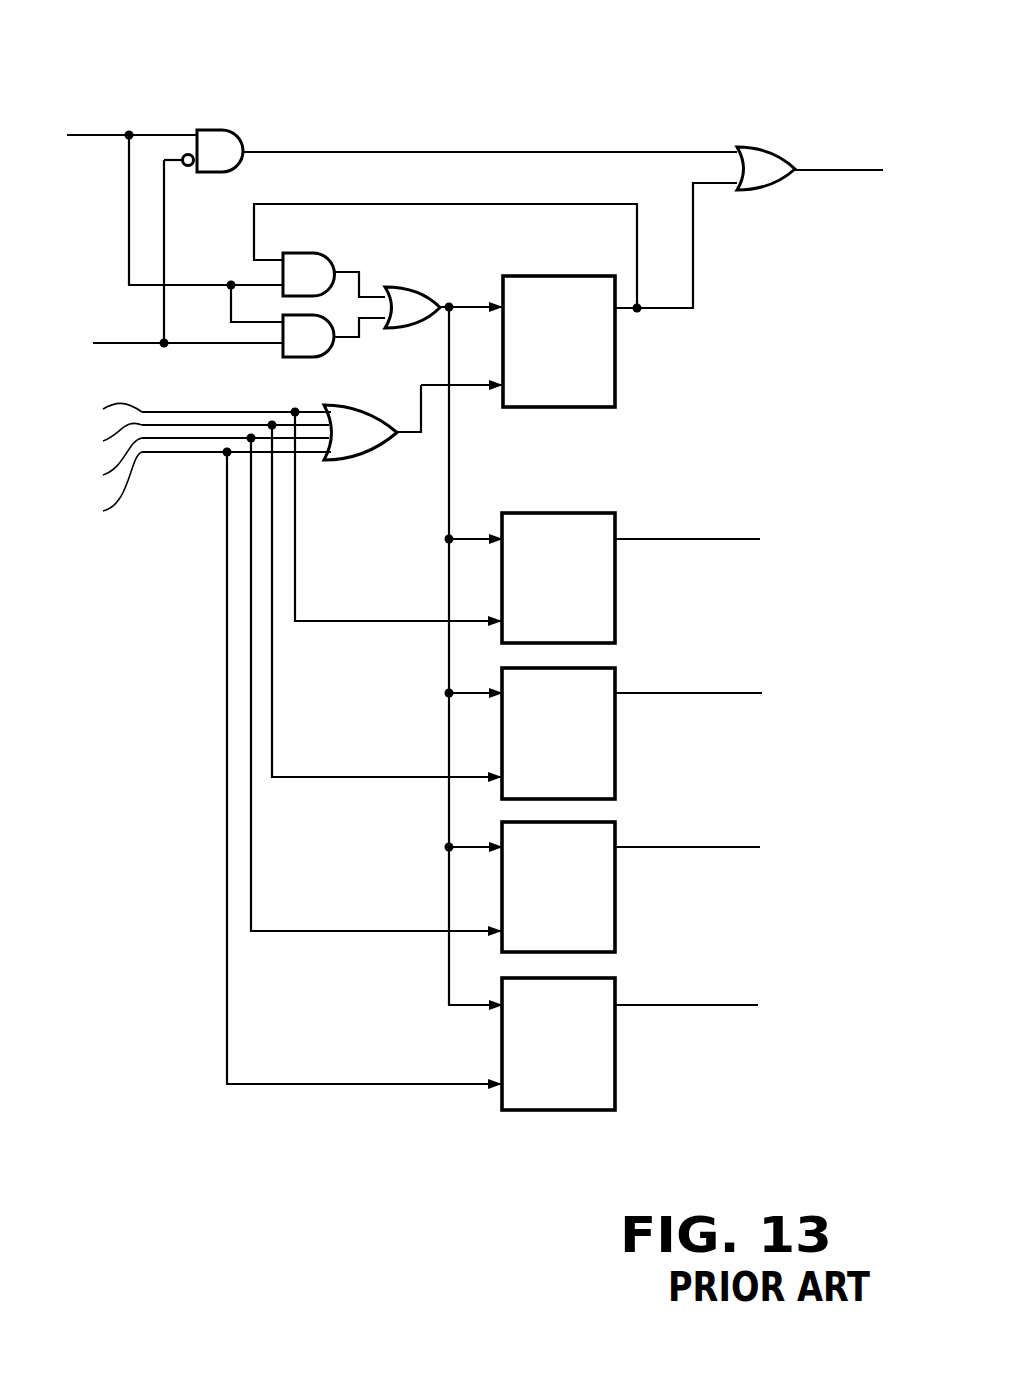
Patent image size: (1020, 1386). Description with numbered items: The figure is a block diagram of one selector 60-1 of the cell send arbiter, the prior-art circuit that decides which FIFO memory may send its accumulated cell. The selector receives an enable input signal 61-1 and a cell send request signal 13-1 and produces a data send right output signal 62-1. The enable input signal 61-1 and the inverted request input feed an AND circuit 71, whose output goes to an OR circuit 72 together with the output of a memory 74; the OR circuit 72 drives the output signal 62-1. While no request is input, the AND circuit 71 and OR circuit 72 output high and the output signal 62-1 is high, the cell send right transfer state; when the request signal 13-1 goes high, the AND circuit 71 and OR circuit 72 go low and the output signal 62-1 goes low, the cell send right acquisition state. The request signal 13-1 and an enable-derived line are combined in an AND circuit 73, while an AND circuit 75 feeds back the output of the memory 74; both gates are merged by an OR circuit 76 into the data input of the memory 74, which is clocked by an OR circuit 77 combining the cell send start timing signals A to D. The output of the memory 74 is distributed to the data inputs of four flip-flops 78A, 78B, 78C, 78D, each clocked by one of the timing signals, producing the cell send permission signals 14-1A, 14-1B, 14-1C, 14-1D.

The selector 60-1 is at (567, 128).
The ENi signal 61-1 is at (105, 133).
The ENo signal 62-1 is at (838, 170).
The cell send request (RDY) signal 13-1 is at (125, 343).
The cell send permission signal 14-1A is at (726, 539).
The cell send permission signal 14-1B is at (726, 693).
The cell send permission signal 14-1C is at (726, 847).
The cell send permission signal 14-1D is at (726, 1005).
The AND circuit 71 is at (243, 131).
The OR circuit 72 is at (768, 147).
The AND circuit 73 is at (328, 353).
The memory 74 is at (578, 276).
The AND circuit 75 is at (305, 253).
The OR circuit 76 is at (418, 287).
The OR circuit 77 is at (378, 452).
The flip-flop 78A is at (603, 513).
The flip-flop 78B is at (605, 668).
The flip-flop 78C is at (605, 822).
The flip-flop 78D is at (605, 978).